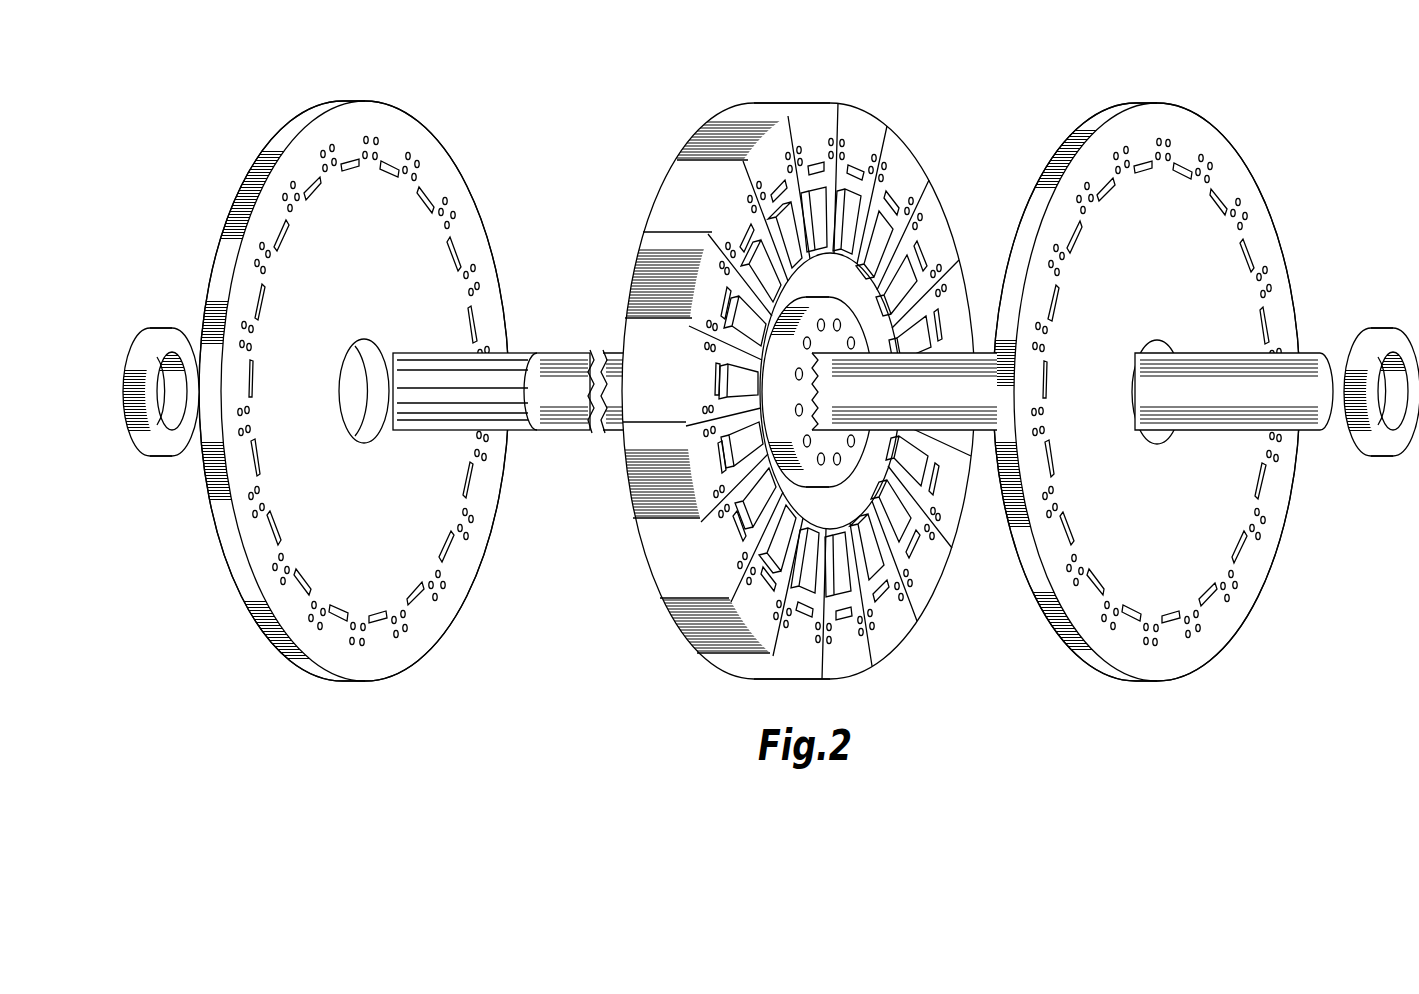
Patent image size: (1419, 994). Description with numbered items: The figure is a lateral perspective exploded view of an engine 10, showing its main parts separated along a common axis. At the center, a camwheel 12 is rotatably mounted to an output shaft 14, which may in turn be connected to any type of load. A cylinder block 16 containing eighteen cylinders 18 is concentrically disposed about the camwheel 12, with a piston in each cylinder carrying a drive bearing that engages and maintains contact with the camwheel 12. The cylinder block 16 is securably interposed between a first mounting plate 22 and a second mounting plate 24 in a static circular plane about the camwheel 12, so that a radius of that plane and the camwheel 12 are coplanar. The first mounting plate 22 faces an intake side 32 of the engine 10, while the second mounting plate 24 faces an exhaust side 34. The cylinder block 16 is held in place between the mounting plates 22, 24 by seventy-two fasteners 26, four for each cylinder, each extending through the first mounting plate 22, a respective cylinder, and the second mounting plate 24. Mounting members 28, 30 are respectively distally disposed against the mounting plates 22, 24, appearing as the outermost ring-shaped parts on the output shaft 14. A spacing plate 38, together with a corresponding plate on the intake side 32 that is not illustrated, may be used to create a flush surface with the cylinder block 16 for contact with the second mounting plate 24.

The engine 10 is at (628, 95).
The camwheel 12 is at (837, 514).
The output shaft 14 is at (1193, 362).
The cylinder block 16 is at (830, 343).
The cylinders 18 is at (722, 118).
The first mounting plate 22 is at (346, 382).
The second mounting plate 24 is at (1142, 386).
The fasteners 26 is at (1048, 332).
The mounting member 28 is at (151, 331).
The mounting member 30 is at (1374, 331).
The intake side 32 is at (237, 585).
The exhaust side 34 is at (1249, 588).
The spacing plate 38 is at (852, 315).